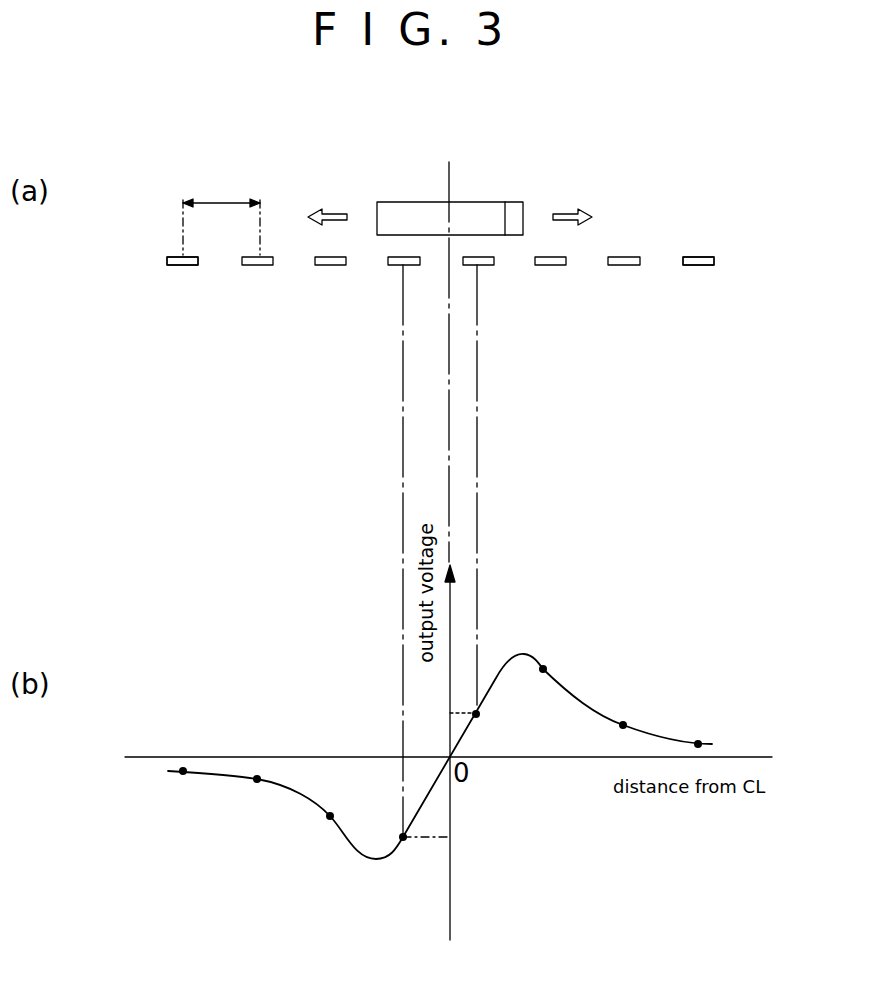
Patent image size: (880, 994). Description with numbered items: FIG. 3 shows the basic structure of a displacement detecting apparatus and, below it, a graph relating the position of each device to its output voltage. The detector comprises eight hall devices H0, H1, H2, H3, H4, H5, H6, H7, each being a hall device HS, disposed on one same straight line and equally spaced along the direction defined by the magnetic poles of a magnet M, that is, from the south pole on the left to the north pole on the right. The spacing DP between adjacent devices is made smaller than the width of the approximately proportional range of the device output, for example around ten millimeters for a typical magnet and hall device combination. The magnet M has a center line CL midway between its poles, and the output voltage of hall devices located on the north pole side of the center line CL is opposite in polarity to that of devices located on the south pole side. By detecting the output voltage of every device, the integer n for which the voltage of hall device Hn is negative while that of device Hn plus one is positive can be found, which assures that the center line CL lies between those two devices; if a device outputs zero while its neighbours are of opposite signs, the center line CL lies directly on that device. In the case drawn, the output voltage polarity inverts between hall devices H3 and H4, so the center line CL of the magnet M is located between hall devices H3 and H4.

The center line CL is at (451, 342).
The magnet M is at (490, 202).
The spacing DP is at (221, 207).
The hall device HS is at (184, 257).
The hall device H0 is at (184, 266).
The hall device H1 is at (258, 266).
The hall device H2 is at (331, 266).
The hall device H3 is at (400, 266).
The hall device H4 is at (482, 266).
The hall device H5 is at (551, 266).
The hall device H6 is at (624, 266).
The hall device H7 is at (699, 266).